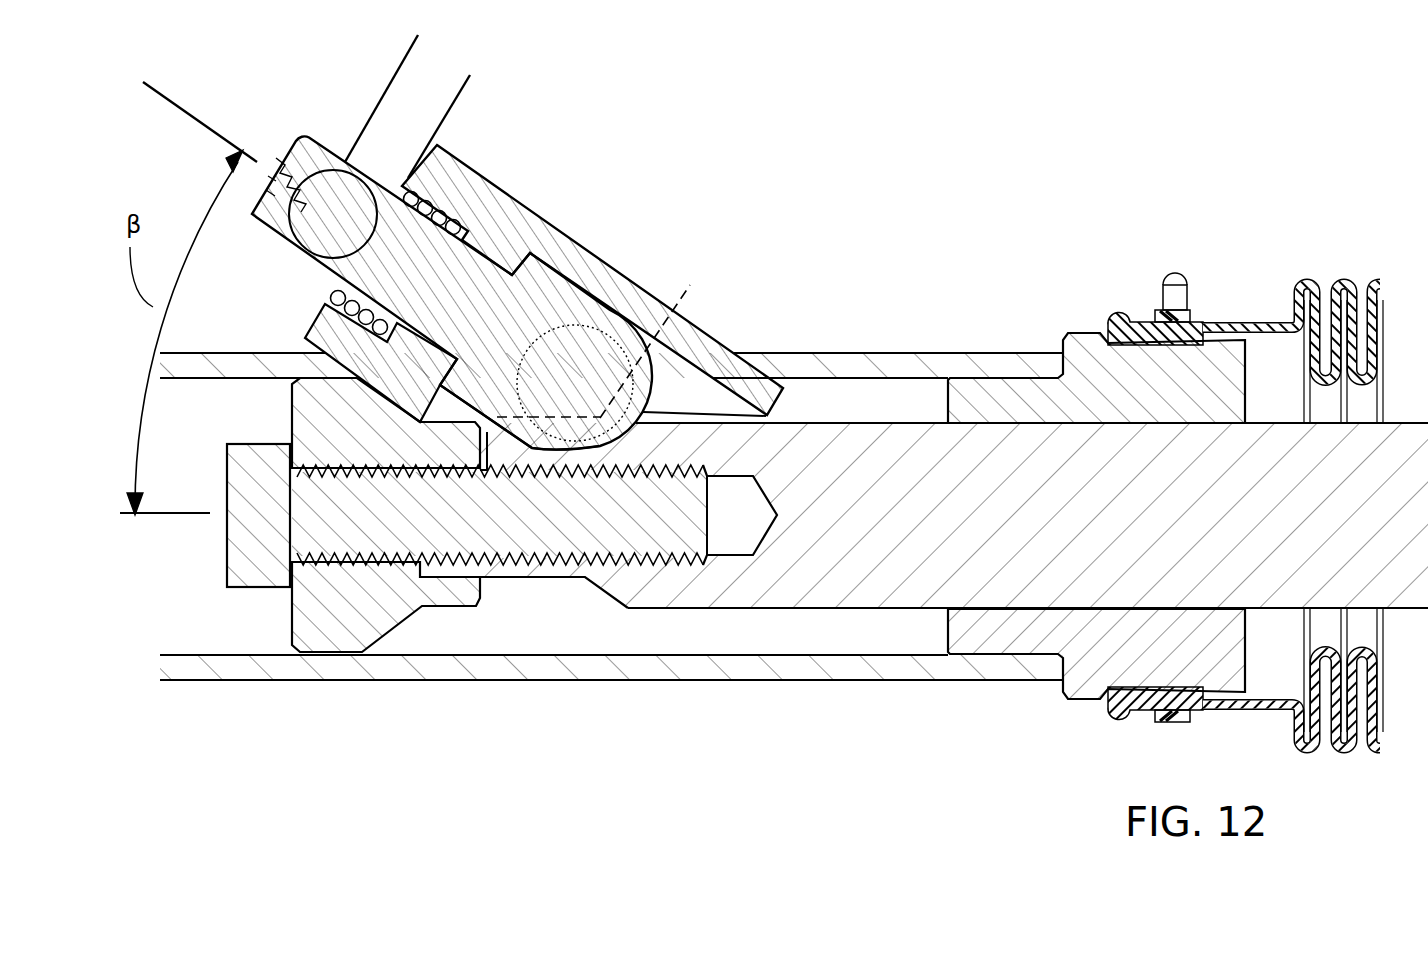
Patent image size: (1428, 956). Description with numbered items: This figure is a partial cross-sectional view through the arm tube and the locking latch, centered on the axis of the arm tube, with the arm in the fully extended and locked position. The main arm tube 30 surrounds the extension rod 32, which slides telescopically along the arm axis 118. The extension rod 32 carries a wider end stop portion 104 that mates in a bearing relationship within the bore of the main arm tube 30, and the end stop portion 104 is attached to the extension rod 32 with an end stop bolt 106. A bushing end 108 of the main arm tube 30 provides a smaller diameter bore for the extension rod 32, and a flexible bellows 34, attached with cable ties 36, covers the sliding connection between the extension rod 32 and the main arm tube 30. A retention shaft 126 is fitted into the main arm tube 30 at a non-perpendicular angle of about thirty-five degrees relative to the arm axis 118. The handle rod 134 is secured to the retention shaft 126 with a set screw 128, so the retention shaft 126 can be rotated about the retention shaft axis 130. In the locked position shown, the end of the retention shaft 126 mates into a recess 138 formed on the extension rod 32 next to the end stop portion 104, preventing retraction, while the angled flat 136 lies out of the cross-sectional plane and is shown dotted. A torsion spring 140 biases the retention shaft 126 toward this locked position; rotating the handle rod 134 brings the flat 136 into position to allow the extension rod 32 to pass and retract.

The main arm tube 30 is at (833, 356).
The extension rod 32 is at (890, 582).
The bellows 34 is at (1340, 285).
The cable ties 36 is at (1195, 317).
The end stop portion 104 is at (318, 637).
The end stop bolt 106 is at (237, 482).
The bushing end 108 is at (1079, 333).
The arm axis 118 is at (168, 514).
The retention shaft 126 is at (549, 290).
The set screw 128 is at (283, 140).
The retention shaft axis 130 is at (173, 102).
The handle rod 134 is at (436, 97).
The flat 136 is at (605, 320).
The recess 138 is at (545, 588).
The torsion spring 140 is at (340, 296).